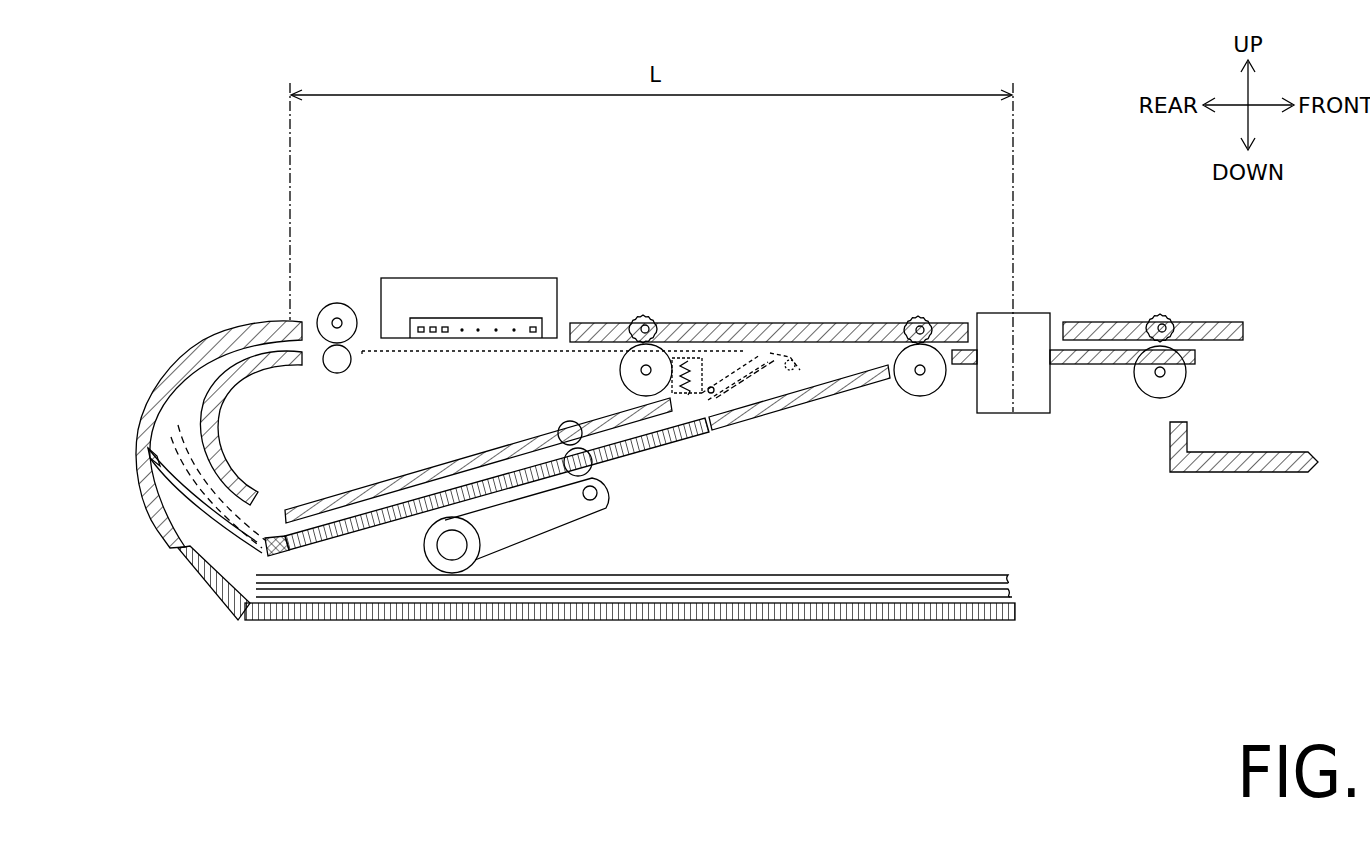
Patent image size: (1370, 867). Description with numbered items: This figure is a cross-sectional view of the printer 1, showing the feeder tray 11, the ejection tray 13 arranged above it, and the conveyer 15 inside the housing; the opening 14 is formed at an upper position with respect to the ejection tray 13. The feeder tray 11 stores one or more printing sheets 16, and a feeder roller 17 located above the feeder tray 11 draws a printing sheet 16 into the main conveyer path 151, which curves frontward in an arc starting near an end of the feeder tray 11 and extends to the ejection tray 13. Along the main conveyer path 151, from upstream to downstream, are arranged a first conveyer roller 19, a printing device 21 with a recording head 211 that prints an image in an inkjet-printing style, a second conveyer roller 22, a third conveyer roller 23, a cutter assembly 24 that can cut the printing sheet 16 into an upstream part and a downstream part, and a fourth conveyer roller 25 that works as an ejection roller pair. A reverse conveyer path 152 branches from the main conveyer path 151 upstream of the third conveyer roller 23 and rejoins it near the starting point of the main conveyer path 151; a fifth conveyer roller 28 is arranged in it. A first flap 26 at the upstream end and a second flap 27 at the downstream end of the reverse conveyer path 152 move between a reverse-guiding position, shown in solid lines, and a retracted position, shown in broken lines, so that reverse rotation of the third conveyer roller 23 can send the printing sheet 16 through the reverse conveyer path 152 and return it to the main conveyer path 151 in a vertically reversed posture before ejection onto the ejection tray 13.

The printer 1 is at (724, 246).
The feeder tray 11 is at (732, 622).
The ejection tray 13 is at (1214, 475).
The opening 14 is at (1277, 409).
The conveyer 15 is at (135, 423).
The main conveyer path 151 is at (147, 448).
The reverse conveyer path 152 is at (672, 446).
The printing sheet 16 is at (825, 575).
The feeder roller 17 is at (425, 558).
The first conveyer roller 19 is at (320, 303).
The printing device 21 is at (503, 276).
The recording head 211 is at (478, 318).
The second conveyer roller 22 is at (645, 315).
The third conveyer roller 23 is at (918, 318).
The cutter assembly 24 is at (1041, 313).
The fourth conveyer roller 25 is at (1160, 316).
The first flap 26 is at (757, 353).
The second flap 27 is at (135, 506).
The fifth conveyer roller 28 is at (560, 430).